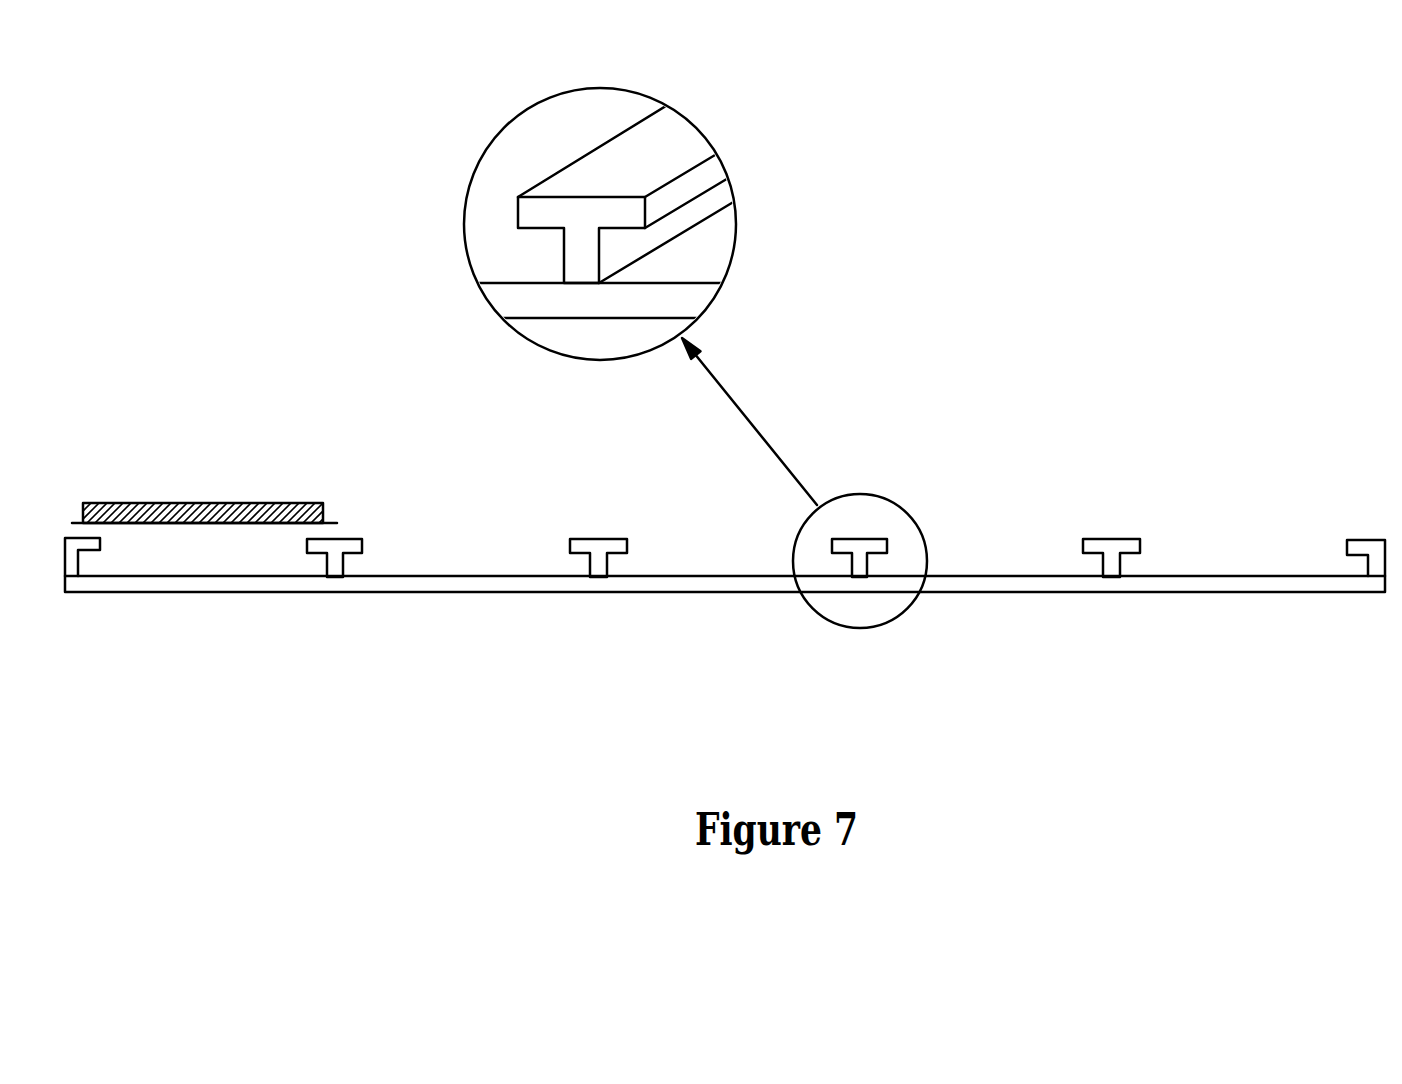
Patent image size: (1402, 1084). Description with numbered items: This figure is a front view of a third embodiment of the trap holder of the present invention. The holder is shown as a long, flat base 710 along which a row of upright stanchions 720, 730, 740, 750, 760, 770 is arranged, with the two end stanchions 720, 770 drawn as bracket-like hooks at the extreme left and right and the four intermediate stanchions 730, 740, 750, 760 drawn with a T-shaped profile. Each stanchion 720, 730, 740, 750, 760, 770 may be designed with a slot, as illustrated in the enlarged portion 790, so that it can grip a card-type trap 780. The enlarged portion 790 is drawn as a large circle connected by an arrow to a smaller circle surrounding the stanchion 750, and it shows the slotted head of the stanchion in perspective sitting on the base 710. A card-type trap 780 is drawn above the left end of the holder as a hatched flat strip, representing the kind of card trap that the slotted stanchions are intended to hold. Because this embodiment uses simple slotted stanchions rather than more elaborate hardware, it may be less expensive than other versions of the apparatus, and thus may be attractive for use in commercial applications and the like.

The substrate 710 is at (1005, 577).
The stanchion 720 is at (82, 562).
The stanchion 730 is at (345, 562).
The stanchion 740 is at (608, 565).
The stanchion 750 is at (868, 565).
The stanchion 760 is at (1123, 565).
The stanchion 770 is at (1346, 550).
The card-type trap 780 is at (307, 503).
The enlarged portion 790 is at (693, 122).